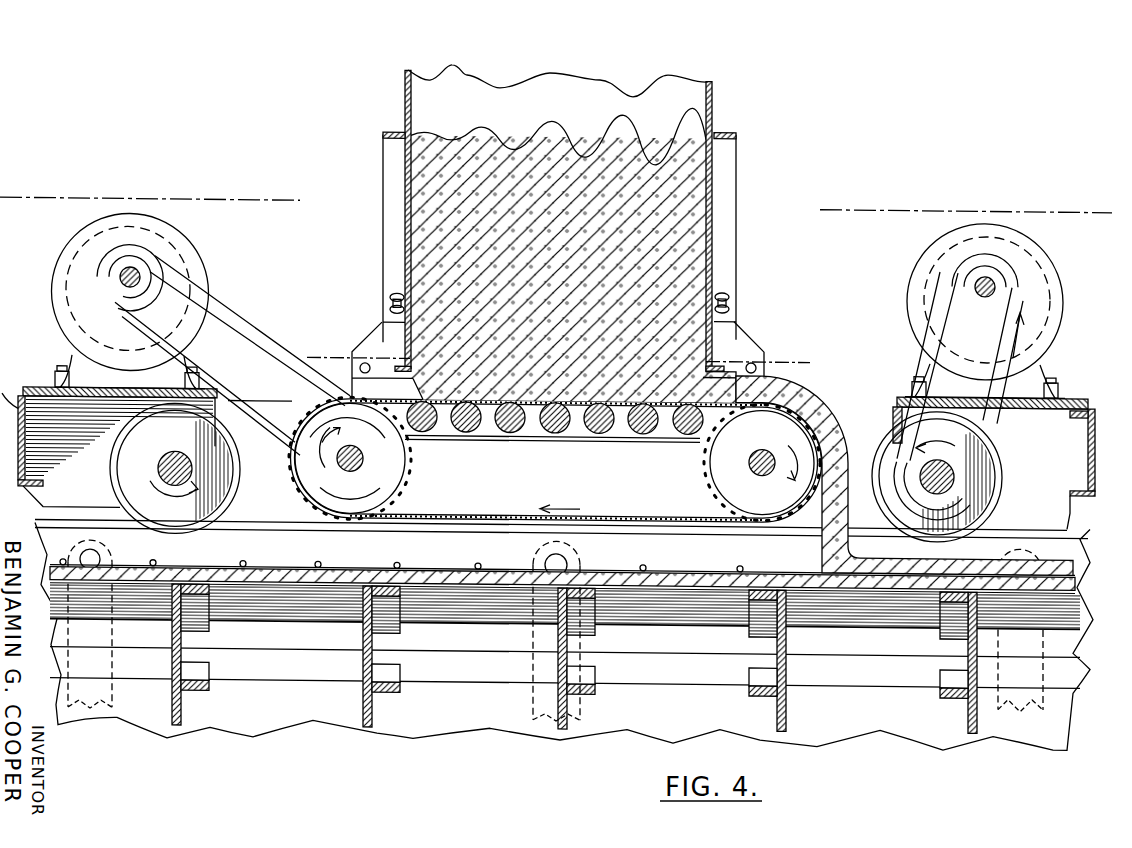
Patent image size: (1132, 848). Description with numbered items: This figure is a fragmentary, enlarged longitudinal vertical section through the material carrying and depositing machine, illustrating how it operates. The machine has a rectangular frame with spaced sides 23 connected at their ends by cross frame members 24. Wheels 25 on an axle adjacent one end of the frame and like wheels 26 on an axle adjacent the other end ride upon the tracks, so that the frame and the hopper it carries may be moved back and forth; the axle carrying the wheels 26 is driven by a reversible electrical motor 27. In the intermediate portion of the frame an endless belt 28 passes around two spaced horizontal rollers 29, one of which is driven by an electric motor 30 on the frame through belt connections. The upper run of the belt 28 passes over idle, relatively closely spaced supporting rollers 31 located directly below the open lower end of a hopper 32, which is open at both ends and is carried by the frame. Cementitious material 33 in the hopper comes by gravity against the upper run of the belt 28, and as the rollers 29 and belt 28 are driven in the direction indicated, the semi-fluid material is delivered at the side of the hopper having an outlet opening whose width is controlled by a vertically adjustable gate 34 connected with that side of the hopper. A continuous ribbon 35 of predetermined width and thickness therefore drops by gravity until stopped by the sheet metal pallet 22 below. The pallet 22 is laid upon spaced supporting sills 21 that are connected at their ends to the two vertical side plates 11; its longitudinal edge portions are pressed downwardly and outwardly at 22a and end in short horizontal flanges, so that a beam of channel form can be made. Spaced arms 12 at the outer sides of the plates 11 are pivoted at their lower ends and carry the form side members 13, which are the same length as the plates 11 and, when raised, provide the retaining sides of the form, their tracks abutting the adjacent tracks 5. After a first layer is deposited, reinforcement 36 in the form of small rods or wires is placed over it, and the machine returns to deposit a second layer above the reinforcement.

The tracks 5 is at (1090, 194).
The vertical side plates 11 is at (270, 720).
The spaced arms 12 is at (72, 660).
The form side members 13 is at (697, 636).
The supporting sills 21 is at (172, 631).
The sheet metal pallet 22 is at (477, 589).
The pressed edge portion of pallet 22a is at (283, 613).
The frame sides 23 is at (265, 413).
The cross frame members 24 is at (1087, 444).
The wheels 25 is at (225, 493).
The wheels 26 is at (985, 478).
The reversible electrical motor 27 is at (1050, 300).
The endless belt 28 is at (470, 519).
The horizontal rollers 29 is at (405, 467).
The electric motor 30 is at (187, 269).
The idle supporting rollers 31 is at (597, 432).
The hopper 32 is at (700, 99).
The cementitious material 33 is at (630, 164).
The vertically adjustable gate 34 is at (380, 340).
The continuous ribbon 35 is at (823, 520).
The reinforcement 36 is at (413, 569).